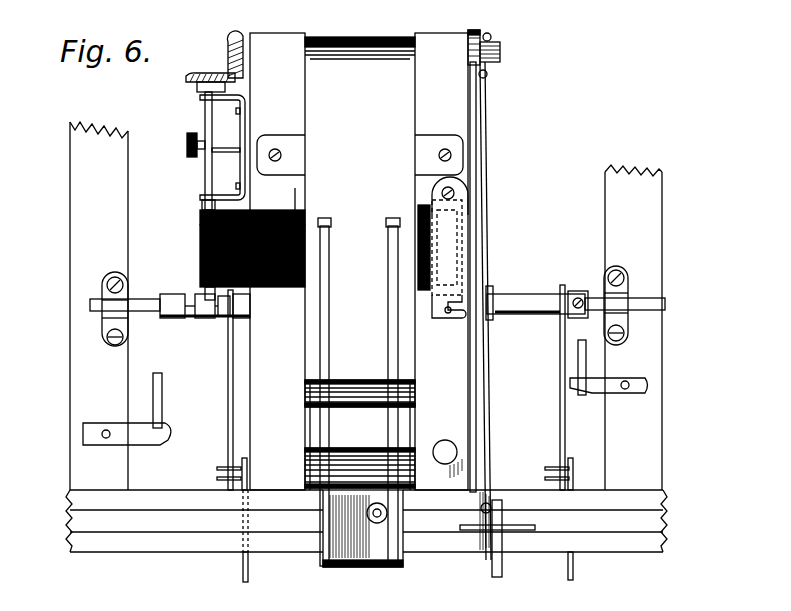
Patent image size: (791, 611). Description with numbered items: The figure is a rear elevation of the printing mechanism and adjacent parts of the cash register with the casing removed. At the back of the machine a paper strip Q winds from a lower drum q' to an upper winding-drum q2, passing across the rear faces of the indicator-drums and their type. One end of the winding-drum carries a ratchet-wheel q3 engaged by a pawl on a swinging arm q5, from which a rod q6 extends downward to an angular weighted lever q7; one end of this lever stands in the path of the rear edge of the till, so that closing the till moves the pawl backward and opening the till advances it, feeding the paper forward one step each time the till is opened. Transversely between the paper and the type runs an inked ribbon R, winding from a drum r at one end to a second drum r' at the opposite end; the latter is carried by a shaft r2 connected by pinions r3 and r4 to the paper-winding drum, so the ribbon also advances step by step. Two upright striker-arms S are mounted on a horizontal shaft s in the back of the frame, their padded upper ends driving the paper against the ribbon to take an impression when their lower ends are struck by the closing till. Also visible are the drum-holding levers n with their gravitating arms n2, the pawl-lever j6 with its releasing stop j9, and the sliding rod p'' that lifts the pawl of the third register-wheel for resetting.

The paper strip Q is at (336, 300).
The lower drum q' is at (255, 261).
The upper winding-drum q2 is at (360, 62).
The ratchet-wheel q3 is at (478, 30).
The swinging arm q5 is at (500, 48).
The rod q6 is at (488, 265).
The angular weighted lever q7 is at (502, 565).
The striker-arms S is at (359, 392).
The horizontal shaft s is at (415, 398).
The sliding rod p'' is at (445, 447).
The inked ribbon R is at (200, 270).
The second drum r' is at (231, 221).
The drum r is at (469, 247).
The shaft r2 is at (205, 121).
The pinion r3 is at (186, 77).
The pinion r4 is at (231, 36).
The lever n is at (228, 427).
The gravitating arm n2 is at (248, 562).
The pawl-lever j6 is at (162, 385).
The stop j9 is at (168, 440).